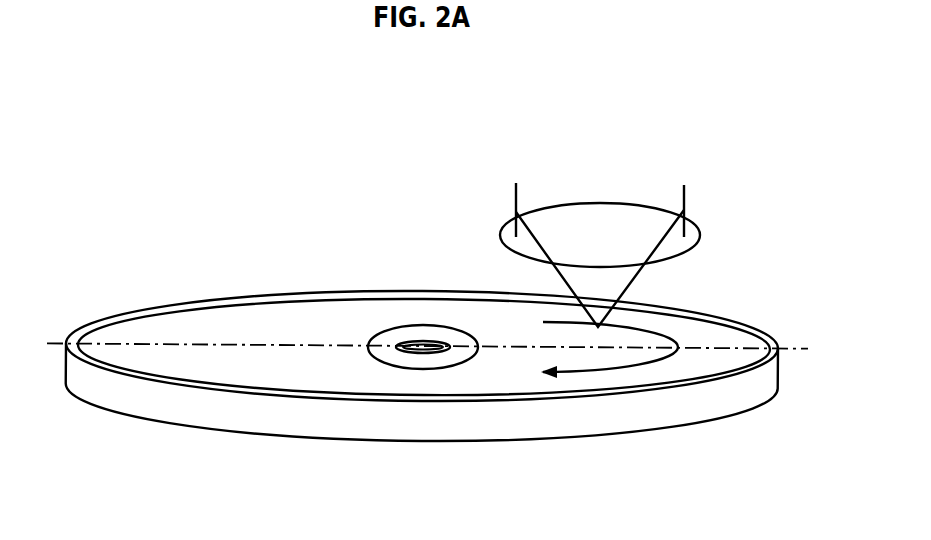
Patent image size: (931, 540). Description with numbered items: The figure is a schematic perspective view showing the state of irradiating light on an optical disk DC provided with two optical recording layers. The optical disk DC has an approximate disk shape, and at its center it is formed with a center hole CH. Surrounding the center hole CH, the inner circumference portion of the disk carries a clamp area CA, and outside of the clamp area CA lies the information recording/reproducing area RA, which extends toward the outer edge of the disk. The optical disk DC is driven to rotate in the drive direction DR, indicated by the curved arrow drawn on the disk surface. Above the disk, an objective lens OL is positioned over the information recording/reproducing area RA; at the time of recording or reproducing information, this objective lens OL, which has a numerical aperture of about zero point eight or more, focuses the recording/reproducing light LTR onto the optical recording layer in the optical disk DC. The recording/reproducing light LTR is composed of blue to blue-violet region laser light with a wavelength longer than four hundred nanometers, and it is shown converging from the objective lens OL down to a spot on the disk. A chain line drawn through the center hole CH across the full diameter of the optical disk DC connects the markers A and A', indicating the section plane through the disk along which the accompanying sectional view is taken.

The optical disk DC is at (166, 287).
The information recording/reproducing area RA is at (266, 300).
The clamp area CA is at (380, 335).
The center hole CH is at (418, 341).
The objective lens OL is at (693, 232).
The recording/reproducing light LTR is at (642, 282).
The drive direction DR is at (637, 365).
The section line end A is at (48, 318).
The section line end A' is at (801, 325).